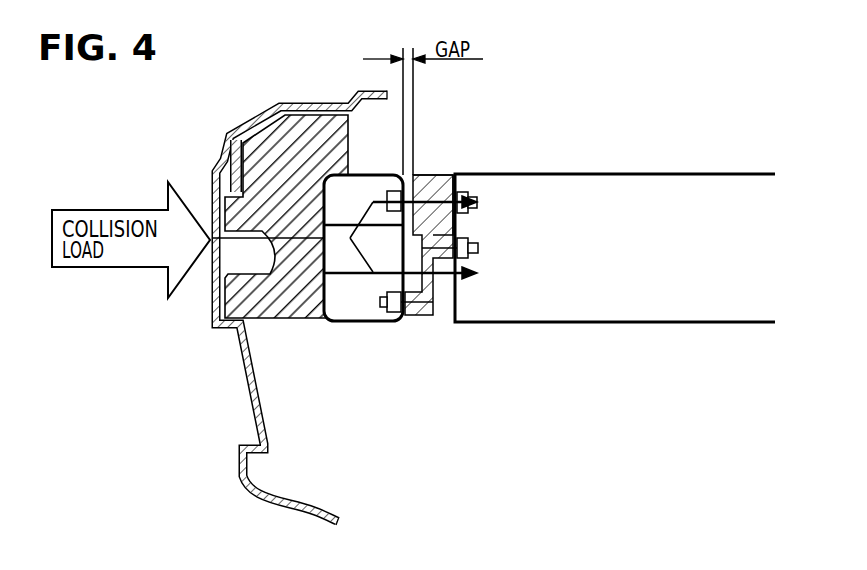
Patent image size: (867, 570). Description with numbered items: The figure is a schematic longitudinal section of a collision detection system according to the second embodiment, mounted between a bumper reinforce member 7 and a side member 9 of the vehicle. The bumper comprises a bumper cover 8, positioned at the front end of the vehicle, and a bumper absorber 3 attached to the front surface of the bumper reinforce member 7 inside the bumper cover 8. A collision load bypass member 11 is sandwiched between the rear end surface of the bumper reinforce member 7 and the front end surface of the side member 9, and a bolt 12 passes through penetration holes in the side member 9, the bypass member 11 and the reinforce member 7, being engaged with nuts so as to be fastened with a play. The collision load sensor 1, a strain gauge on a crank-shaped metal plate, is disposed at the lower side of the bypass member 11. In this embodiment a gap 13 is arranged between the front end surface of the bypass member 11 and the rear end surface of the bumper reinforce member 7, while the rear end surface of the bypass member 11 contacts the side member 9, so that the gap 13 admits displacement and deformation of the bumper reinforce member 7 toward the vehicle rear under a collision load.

The collision load sensor 1 is at (414, 306).
The bumper absorber 3 is at (288, 312).
The bumper reinforce member 7 is at (363, 322).
The bumper cover 8 is at (282, 497).
The side member 9 is at (599, 325).
The collision load bypass member 11 is at (445, 177).
The bolt 12 is at (425, 177).
The gap 13 is at (408, 177).